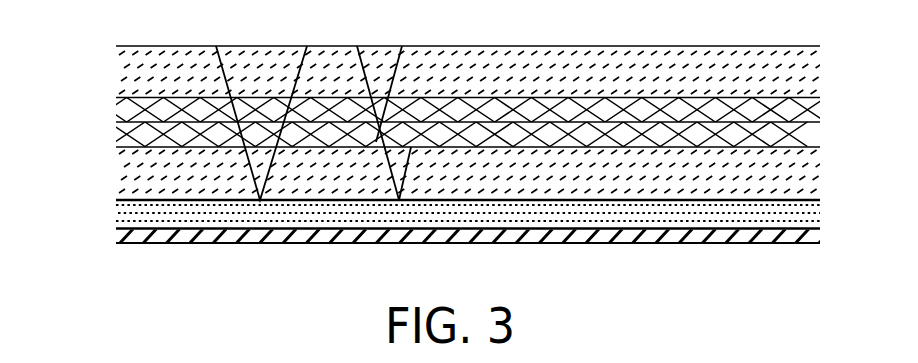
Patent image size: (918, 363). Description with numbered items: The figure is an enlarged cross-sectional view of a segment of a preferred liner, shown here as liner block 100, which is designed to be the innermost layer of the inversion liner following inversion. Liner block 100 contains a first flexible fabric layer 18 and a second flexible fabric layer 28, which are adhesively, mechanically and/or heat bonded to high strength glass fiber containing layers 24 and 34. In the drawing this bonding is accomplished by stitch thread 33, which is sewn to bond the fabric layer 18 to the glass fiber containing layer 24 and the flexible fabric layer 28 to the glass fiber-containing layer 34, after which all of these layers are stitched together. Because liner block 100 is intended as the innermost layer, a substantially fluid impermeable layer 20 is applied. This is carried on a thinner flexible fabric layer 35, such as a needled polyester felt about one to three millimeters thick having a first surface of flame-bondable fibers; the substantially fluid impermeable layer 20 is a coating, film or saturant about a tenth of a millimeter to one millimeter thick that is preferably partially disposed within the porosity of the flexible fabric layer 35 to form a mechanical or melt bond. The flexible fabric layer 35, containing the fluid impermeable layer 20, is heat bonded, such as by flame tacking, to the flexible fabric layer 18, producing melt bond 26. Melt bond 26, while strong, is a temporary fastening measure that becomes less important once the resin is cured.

The liner block 100 is at (100, 168).
The second flexible fabric layer 28 is at (122, 67).
The glass fiber containing layer 34 is at (125, 110).
The glass fiber containing layer 24 is at (123, 128).
The first flexible fabric layer 18 is at (143, 185).
The melt bond 26 is at (594, 202).
The flexible fabric layer 35 is at (695, 210).
The substantially fluid impermeable layer 20 is at (117, 232).
The stitch thread 33 is at (306, 60).